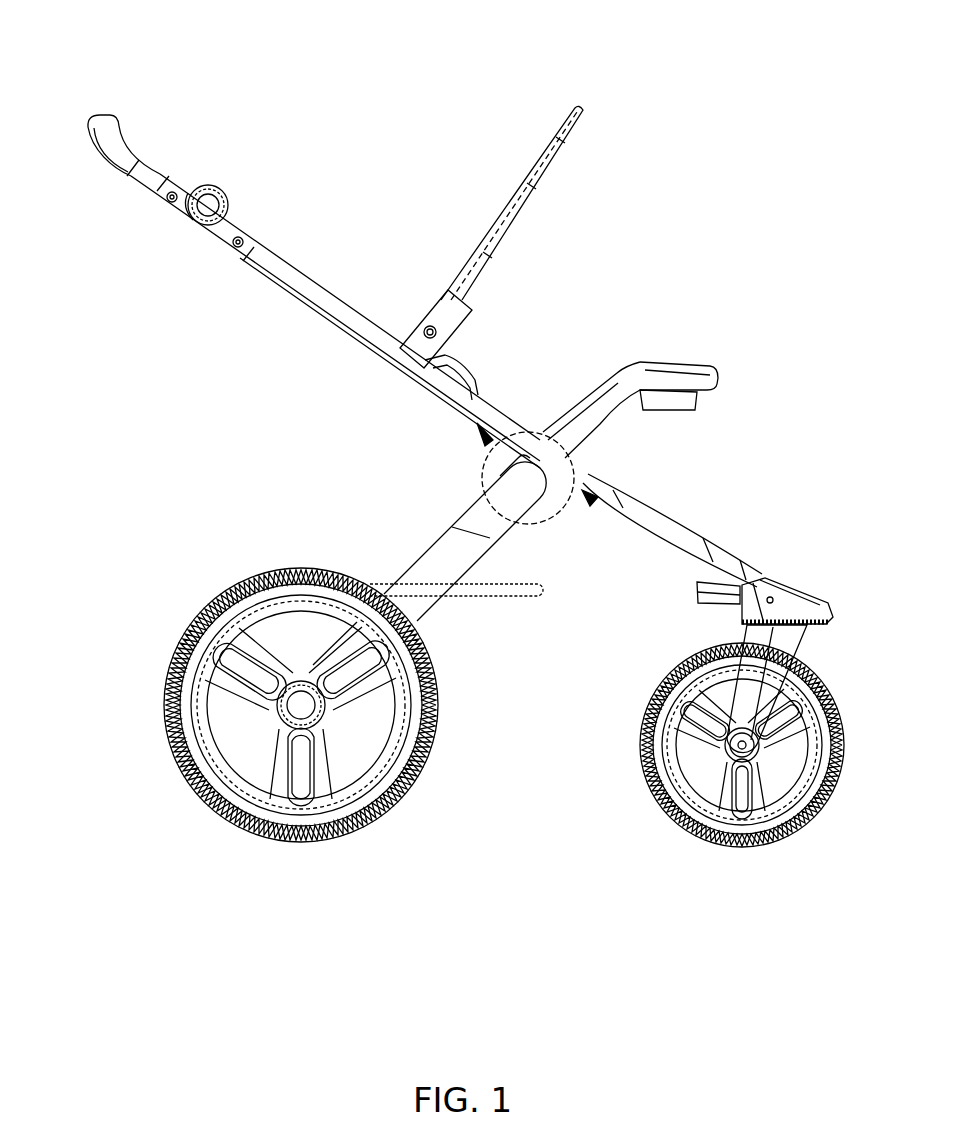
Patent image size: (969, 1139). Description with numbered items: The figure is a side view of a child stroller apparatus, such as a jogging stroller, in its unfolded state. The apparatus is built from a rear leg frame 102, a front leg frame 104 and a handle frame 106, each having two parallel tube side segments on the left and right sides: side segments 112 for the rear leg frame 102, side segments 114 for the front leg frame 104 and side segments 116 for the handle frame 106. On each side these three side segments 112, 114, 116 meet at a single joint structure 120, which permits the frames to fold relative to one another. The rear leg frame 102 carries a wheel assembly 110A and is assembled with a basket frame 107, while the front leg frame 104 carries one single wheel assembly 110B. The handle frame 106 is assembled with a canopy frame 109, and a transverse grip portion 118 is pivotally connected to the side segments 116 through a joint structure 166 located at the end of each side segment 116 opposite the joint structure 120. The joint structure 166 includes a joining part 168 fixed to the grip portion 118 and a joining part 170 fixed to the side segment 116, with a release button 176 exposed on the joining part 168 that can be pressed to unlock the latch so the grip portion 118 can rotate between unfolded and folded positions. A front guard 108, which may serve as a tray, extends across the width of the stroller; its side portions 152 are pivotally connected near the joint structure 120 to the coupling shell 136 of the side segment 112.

The rear leg frame 102 is at (500, 560).
The front leg frame 104 is at (657, 562).
The handle frame 106 is at (78, 86).
The basket frame 107 is at (493, 590).
The front guard 108 is at (728, 356).
The canopy frame 109 is at (545, 160).
The wheel assembly 110A is at (433, 806).
The wheel assembly 110B is at (634, 803).
The side segment 112 is at (422, 573).
The side segment 114 is at (692, 537).
The side segment 116 is at (307, 288).
The grip portion 118 is at (147, 162).
The joint structure 120 is at (547, 418).
The coupling shell 136 is at (494, 467).
The side portion 152 is at (601, 429).
The joint structure 166 is at (236, 182).
The joining part 168 is at (160, 193).
The joining part 170 is at (227, 240).
The release button 176 is at (205, 212).